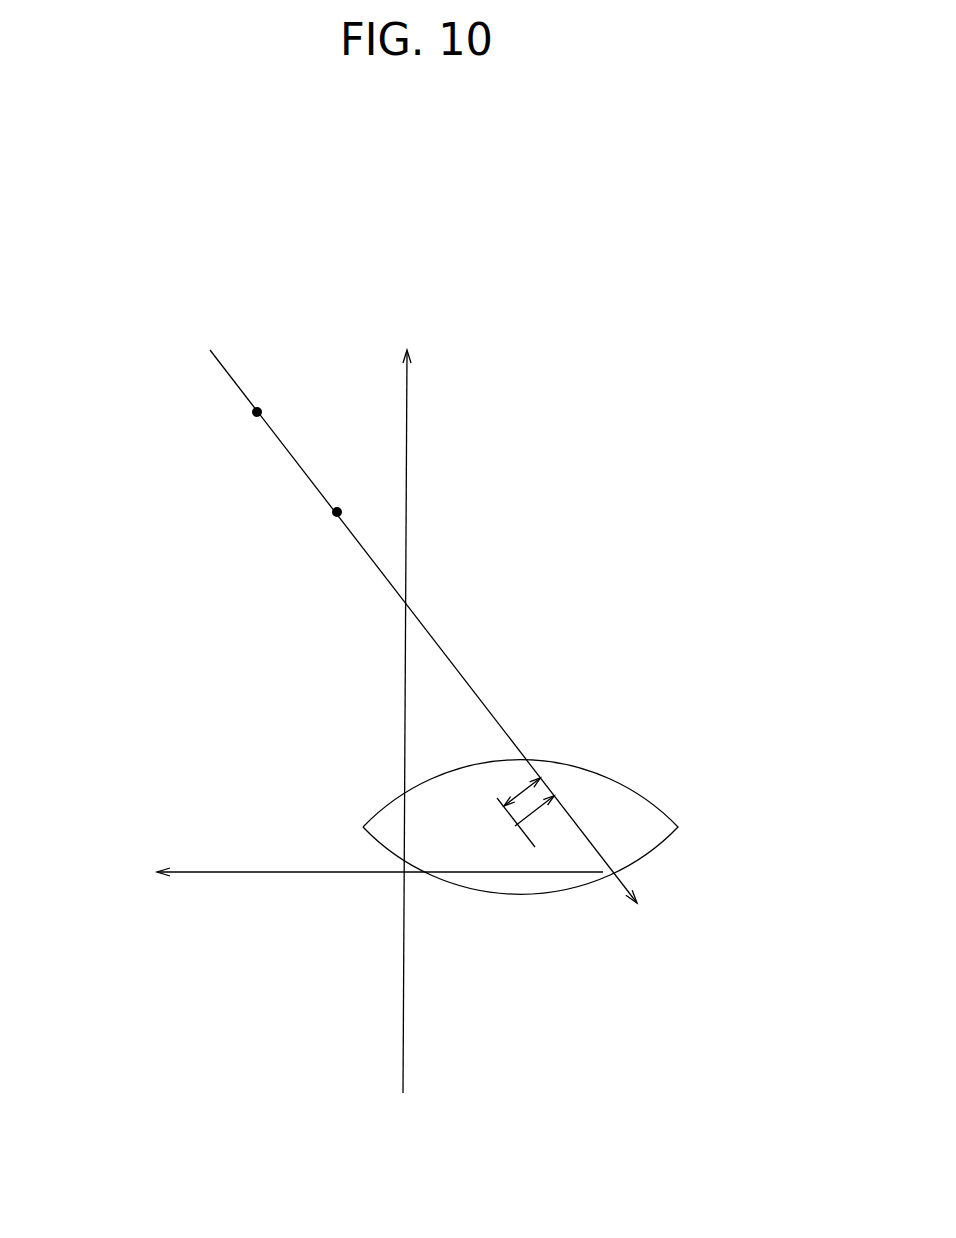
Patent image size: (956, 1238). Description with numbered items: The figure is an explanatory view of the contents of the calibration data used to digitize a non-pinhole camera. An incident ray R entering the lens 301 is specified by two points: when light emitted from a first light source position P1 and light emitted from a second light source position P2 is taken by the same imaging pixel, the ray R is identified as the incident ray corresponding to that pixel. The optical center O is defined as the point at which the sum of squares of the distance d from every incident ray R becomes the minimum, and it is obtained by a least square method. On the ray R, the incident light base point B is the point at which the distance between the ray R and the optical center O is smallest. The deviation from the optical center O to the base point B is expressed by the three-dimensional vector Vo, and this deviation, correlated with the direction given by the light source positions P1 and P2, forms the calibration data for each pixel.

The object (lens-shaped body) 301 is at (460, 887).
The incident ray R is at (277, 430).
The first light source position P1 is at (257, 415).
The second light source position P2 is at (337, 515).
The incident light base point B is at (557, 802).
The distance d is at (517, 783).
The three-dimensional vector Vo is at (537, 820).
The optical center O is at (513, 828).